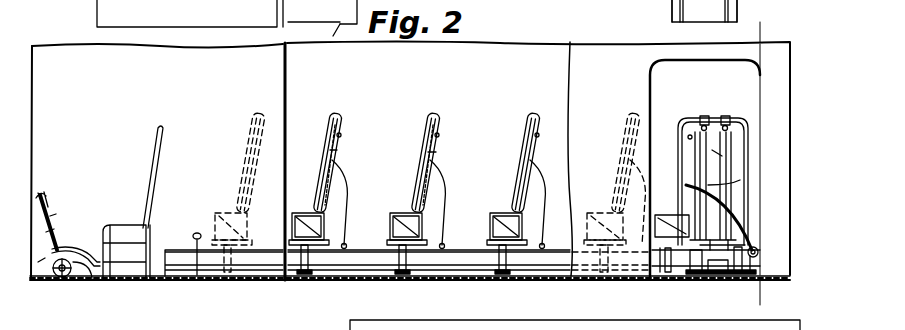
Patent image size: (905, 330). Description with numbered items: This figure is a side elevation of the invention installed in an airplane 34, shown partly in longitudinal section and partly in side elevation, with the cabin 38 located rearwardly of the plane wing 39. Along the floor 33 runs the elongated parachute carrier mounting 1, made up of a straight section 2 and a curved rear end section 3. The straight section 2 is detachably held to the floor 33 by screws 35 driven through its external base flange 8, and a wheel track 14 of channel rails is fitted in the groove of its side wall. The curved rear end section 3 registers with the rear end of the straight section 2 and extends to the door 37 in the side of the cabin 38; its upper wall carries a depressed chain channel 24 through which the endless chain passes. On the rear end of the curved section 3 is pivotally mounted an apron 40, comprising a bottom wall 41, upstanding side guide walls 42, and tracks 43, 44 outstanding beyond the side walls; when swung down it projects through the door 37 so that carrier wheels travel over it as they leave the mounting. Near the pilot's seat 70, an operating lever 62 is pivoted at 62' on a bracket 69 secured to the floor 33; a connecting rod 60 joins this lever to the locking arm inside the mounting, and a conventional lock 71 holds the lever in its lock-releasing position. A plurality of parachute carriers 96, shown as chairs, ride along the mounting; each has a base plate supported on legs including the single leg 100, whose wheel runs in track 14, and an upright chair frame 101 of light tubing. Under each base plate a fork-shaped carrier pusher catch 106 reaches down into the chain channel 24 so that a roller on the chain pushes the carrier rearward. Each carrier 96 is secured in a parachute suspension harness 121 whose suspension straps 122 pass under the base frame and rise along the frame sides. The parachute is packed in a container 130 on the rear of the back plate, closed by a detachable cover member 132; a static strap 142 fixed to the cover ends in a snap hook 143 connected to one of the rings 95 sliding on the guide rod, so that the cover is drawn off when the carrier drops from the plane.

The parachute carrier mounting 1 is at (328, 244).
The straight section 2 is at (455, 253).
The curved rear end section 3 is at (764, 27).
The base flange 8 is at (195, 249).
The wheel track 14 is at (326, 262).
The chain channel 24 is at (692, 280).
The floor 33 is at (218, 281).
The airplane 34 is at (585, 42).
The screws 35 is at (575, 324).
The door 37 is at (553, 72).
The cabin 38 is at (497, 65).
The plane wing 39 is at (334, 18).
The apron 40 is at (692, 22).
The bottom wall 41 is at (688, 293).
The side guide walls 42 is at (680, 22).
The track 43 is at (740, 12).
The track 44 is at (672, 10).
The connecting rod 60 is at (92, 237).
The operating lever 62 is at (59, 218).
The pivot 62' is at (60, 288).
The bracket 69 is at (93, 282).
The pilot's seat 70 is at (148, 208).
The lock 71 is at (48, 262).
The rings 95 is at (490, 320).
The parachute carrier 96 is at (490, 214).
The leg 100 is at (300, 258).
The chair frame 101 is at (330, 208).
The carrier pusher catch 106 is at (700, 200).
The parachute suspension harness 121 is at (338, 115).
The suspension straps 122 is at (700, 118).
The parachute container 130 is at (345, 140).
The detachable cover member 132 is at (343, 160).
The static strap 142 is at (350, 198).
The snap hook 143 is at (756, 250).